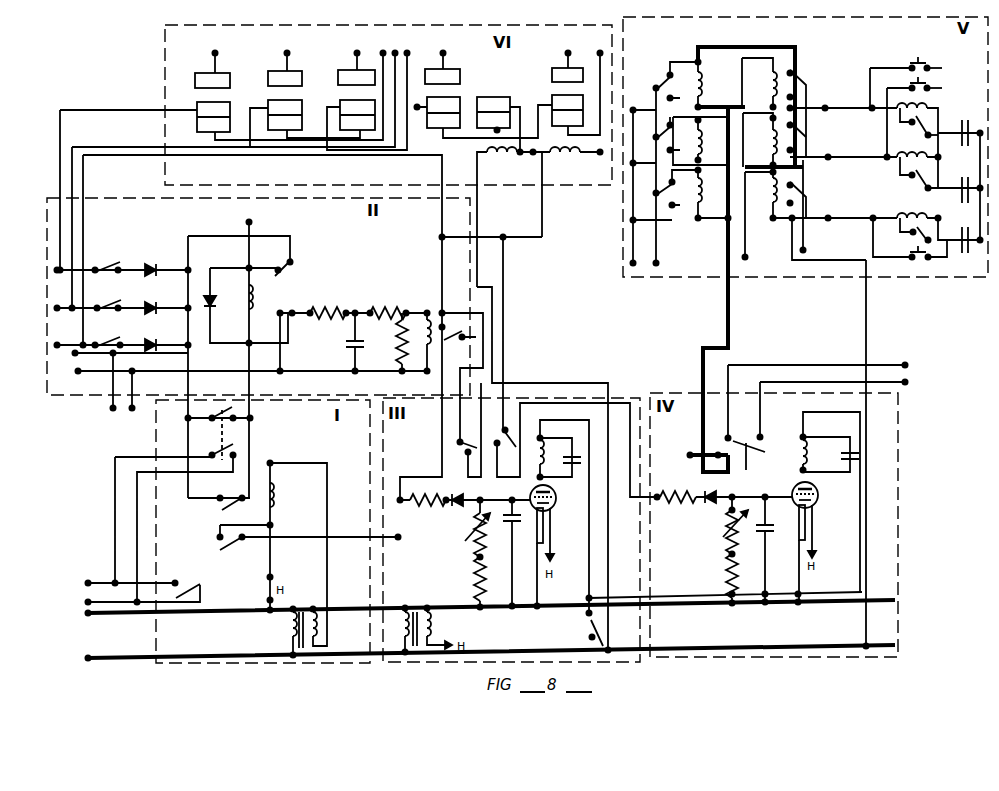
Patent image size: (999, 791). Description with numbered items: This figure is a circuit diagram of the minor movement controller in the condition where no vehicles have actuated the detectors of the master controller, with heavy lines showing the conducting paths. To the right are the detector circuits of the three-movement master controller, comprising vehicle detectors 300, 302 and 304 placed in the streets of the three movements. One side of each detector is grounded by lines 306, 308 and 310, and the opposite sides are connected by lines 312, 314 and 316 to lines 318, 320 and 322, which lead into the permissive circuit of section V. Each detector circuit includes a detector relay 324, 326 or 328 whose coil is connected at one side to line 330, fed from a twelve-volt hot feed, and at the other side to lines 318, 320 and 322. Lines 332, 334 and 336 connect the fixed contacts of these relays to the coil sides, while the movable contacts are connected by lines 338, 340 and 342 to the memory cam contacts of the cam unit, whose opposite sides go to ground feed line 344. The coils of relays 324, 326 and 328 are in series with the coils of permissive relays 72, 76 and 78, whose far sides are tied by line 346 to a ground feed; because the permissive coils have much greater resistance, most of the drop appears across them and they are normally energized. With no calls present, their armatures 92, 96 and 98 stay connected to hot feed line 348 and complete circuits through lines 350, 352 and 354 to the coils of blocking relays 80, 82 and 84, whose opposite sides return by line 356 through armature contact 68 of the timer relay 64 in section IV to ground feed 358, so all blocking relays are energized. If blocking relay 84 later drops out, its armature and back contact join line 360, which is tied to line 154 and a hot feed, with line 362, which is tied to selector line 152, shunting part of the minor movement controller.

The line 354 is at (744, 43).
The line 352 is at (738, 105).
The line 356 is at (727, 258).
The ground feed 358 is at (688, 455).
The line 350 is at (807, 170).
The line 346 is at (747, 232).
The hot feed line 348 is at (819, 207).
The line 362 is at (134, 398).
The line 360 is at (111, 397).
The line 316 is at (896, 259).
The line 318 is at (842, 100).
The line 320 is at (867, 156).
The line 322 is at (857, 216).
The line 312 is at (886, 68).
The line 314 is at (901, 90).
The blocking relay 84 is at (711, 85).
The blocking relay 82 is at (711, 140).
The blocking relay 80 is at (713, 194).
The permissive relay 72 is at (759, 84).
The permissive relay 76 is at (760, 141).
The permissive relay 78 is at (774, 195).
The armature 92 is at (802, 107).
The armature 96 is at (808, 130).
The armature 98 is at (813, 198).
The vehicle detector 300 is at (938, 45).
The vehicle detector 302 is at (925, 86).
The vehicle detector 304 is at (919, 263).
The line 306 is at (933, 70).
The line 308 is at (939, 90).
The line 310 is at (948, 256).
The line 342 is at (942, 268).
The detector relay 324 is at (912, 122).
The detector relay 326 is at (912, 175).
The line 336 is at (913, 233).
The line 332 is at (917, 130).
The line 334 is at (917, 185).
The line 338 is at (928, 137).
The line 340 is at (928, 190).
The detector relay 328 is at (904, 213).
The ground feed line 344 is at (961, 144).
The line 330 is at (967, 199).
The line 154 is at (198, 354).
The line 152 is at (173, 369).
The armature contact 68 is at (726, 455).
The relay 64 is at (807, 463).